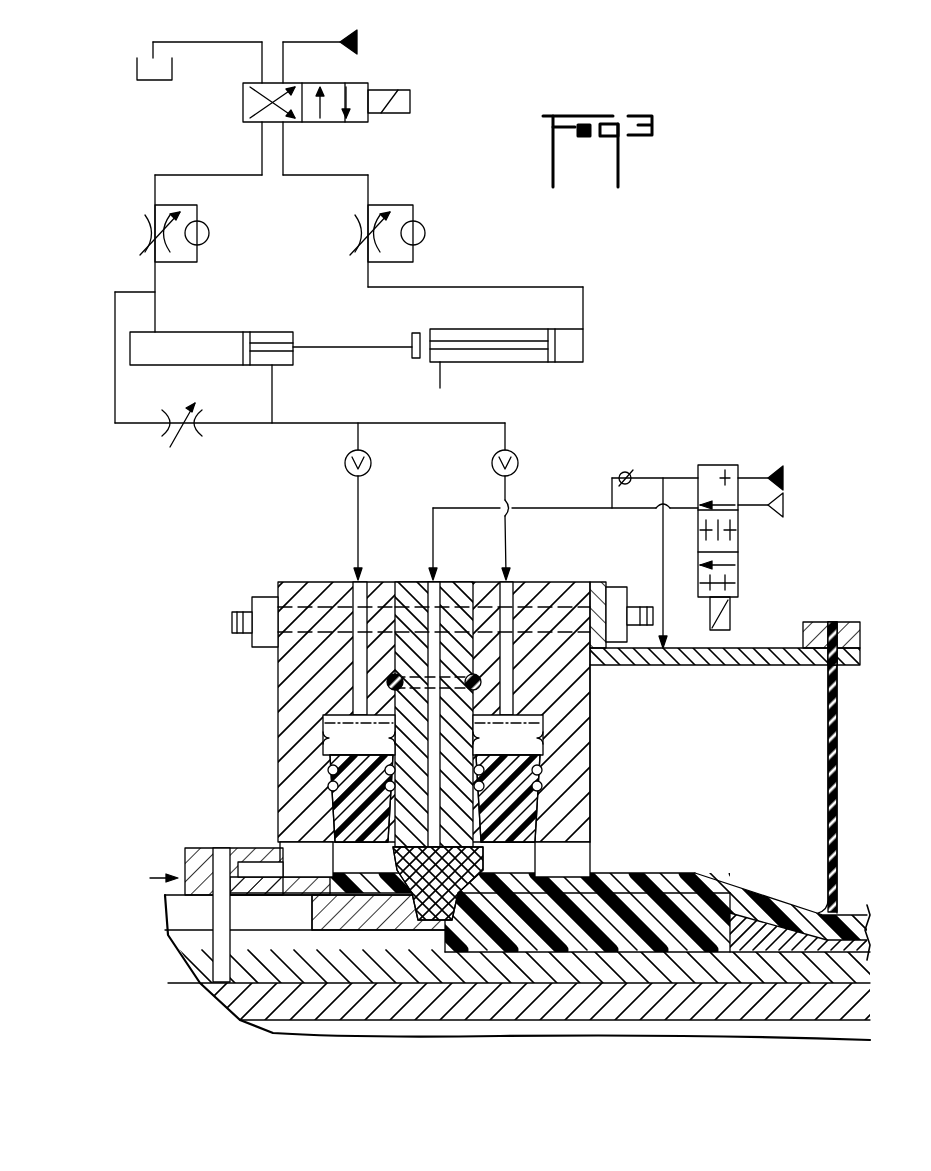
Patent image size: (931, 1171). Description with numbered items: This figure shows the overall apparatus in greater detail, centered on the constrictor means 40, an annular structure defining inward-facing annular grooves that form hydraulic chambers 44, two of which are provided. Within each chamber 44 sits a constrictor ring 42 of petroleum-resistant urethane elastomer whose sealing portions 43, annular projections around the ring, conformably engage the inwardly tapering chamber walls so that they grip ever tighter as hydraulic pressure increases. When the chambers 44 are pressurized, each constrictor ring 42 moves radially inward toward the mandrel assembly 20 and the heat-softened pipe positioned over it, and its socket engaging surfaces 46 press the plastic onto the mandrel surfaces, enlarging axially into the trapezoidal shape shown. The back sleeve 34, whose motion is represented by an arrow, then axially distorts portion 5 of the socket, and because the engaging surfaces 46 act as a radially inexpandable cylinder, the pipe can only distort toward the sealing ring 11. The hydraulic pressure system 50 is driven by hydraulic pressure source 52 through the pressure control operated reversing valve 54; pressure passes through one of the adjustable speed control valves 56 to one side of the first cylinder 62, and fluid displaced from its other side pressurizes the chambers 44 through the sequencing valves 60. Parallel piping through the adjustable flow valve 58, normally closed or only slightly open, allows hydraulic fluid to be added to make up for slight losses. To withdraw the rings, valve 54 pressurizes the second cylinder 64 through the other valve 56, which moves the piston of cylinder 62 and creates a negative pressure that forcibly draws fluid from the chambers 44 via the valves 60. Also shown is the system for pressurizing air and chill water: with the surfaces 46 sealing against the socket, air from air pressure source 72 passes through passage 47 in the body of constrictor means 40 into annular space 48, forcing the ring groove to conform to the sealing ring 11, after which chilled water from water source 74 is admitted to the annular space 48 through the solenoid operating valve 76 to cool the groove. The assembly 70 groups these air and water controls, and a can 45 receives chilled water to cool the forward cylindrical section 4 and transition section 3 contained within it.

The transition section 3 is at (750, 905).
The forward cylindrical section 4 is at (614, 873).
The portion of socket 5 is at (363, 887).
The sealing ring 11 is at (417, 897).
The mandrel assembly 20 is at (188, 1003).
The back sleeve 34 is at (255, 880).
The constrictor means 40 is at (665, 710).
The constrictor ring 42 is at (424, 800).
The sealing portions 43 is at (330, 768).
The hydraulic chamber 44 is at (433, 735).
The can 45 is at (757, 648).
The socket engaging surfaces 46 is at (340, 870).
The passage 47 is at (434, 593).
The annular space 48 is at (396, 845).
The hydraulic pressure system 50 is at (145, 165).
The hydraulic pressure source 52 is at (372, 27).
The pressure control operated reversing valve 54 is at (352, 86).
The adjustable speed control valves 56 is at (348, 232).
The adjustable flow valve 58 is at (170, 410).
The sequencing valves 60 is at (492, 462).
The first cylinder 62 is at (200, 332).
The second cylinder 64 is at (476, 329).
The second valve assembly 70 is at (772, 521).
The air pressure source 72 is at (788, 522).
The water source 74 is at (778, 465).
The solenoid operating valve 76 is at (720, 465).